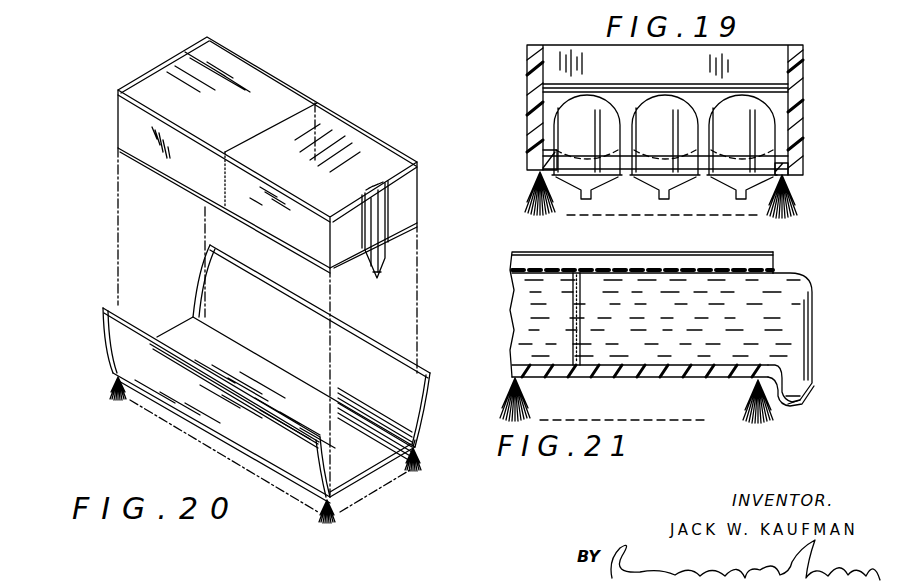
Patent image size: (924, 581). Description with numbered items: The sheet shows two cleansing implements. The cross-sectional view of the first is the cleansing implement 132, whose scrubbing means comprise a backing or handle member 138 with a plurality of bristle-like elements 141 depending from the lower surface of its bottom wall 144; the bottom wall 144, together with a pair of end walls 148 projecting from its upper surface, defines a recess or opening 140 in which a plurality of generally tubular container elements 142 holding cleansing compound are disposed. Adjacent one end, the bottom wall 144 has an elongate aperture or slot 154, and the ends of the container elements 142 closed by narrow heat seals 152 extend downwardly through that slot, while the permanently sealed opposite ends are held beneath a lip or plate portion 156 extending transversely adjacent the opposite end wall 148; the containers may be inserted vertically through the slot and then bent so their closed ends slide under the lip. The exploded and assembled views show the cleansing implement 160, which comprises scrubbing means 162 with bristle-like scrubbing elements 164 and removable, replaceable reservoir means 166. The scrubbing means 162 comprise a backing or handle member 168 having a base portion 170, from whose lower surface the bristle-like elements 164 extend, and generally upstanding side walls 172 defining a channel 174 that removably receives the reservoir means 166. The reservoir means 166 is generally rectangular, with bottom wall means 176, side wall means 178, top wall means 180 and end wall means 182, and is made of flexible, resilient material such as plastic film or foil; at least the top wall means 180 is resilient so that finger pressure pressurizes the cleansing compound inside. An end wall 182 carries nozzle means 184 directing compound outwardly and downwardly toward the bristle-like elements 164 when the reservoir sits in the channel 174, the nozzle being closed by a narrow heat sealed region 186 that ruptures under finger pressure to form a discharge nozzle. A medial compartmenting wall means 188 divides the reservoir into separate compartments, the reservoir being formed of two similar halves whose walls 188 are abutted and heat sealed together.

In FIG. 20, the cleansing implement 160 is at (423, 267).
In FIG. 21, the cleansing implement 160 is at (571, 251).
In FIG. 20, the scrubbing means 162 is at (427, 432).
In FIG. 20, the bristle-like scrubbing elements 164 is at (418, 461).
In FIG. 21, the bristle-like scrubbing elements 164 is at (771, 415).
In FIG. 20, the reservoir means 166 is at (384, 136).
In FIG. 20, the backing or handle member 168 is at (430, 371).
In FIG. 20, the base portion 170 is at (377, 445).
In FIG. 21, the base portion 170 is at (725, 380).
In FIG. 20, the side walls 172 is at (170, 365).
In FIG. 21, the side walls 172 is at (680, 258).
In FIG. 20, the channel 174 is at (182, 307).
In FIG. 21, the bottom wall means 176 is at (661, 378).
In FIG. 20, the side wall means 178 is at (318, 240).
In FIG. 20, the top wall means 180 is at (300, 160).
In FIG. 20, the end wall means 182 is at (392, 203).
In FIG. 20, the nozzle means 184 is at (370, 259).
In FIG. 21, the nozzle means 184 is at (800, 353).
In FIG. 20, the narrow heat sealed region 186 is at (377, 277).
In FIG. 21, the narrow heat sealed region 186 is at (797, 404).
In FIG. 20, the compartmenting wall means 188 is at (347, 100).
In FIG. 21, the compartmenting wall means 188 is at (580, 368).
In FIG. 19, the cleansing implement 132 is at (524, 71).
In FIG. 19, the backing or handle member 138 is at (803, 150).
In FIG. 19, the recess or opening 140 is at (803, 92).
In FIG. 19, the bristle-like elements 141 is at (638, 195).
In FIG. 19, the container elements 142 is at (725, 106).
In FIG. 19, the bottom wall 144 is at (550, 150).
In FIG. 19, the end walls 148 is at (565, 52).
In FIG. 19, the narrow heat seals 152 is at (662, 186).
In FIG. 19, the elongate aperture or slot 154 is at (792, 165).
In FIG. 19, the lip or plate portion 156 is at (714, 88).